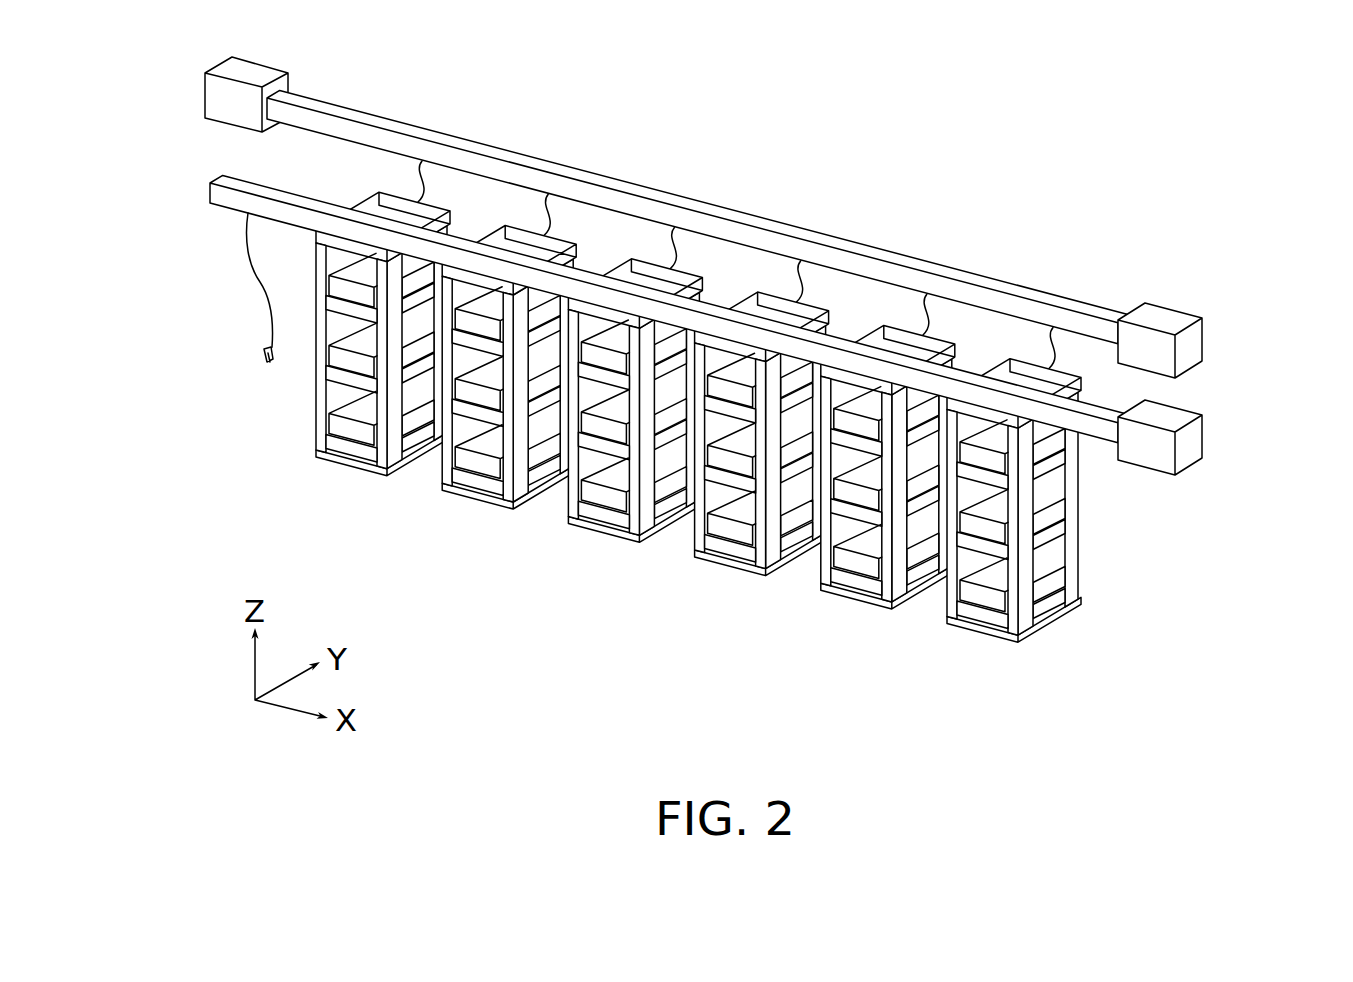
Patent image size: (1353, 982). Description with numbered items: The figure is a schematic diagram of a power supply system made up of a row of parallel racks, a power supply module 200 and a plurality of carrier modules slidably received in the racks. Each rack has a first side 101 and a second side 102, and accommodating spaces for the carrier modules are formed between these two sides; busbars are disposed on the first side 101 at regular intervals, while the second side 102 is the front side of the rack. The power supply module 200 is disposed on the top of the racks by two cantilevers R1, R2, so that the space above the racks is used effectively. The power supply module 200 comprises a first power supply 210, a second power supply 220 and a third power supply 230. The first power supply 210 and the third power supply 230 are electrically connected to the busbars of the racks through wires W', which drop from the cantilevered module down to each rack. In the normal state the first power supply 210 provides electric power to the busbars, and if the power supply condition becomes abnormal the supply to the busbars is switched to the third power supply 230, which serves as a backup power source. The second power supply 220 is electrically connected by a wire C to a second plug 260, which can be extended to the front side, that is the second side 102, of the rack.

The first side 101 is at (1080, 578).
The second side 102 is at (1008, 641).
The power supply module 200 is at (726, 203).
The first power supply 210 is at (233, 112).
The second power supply 220 is at (1188, 443).
The third power supply 230 is at (1187, 348).
The second plug 260 is at (265, 354).
The cantilever R1 is at (240, 197).
The cantilever R2 is at (330, 108).
The wire C is at (260, 293).
The wire W' is at (679, 260).